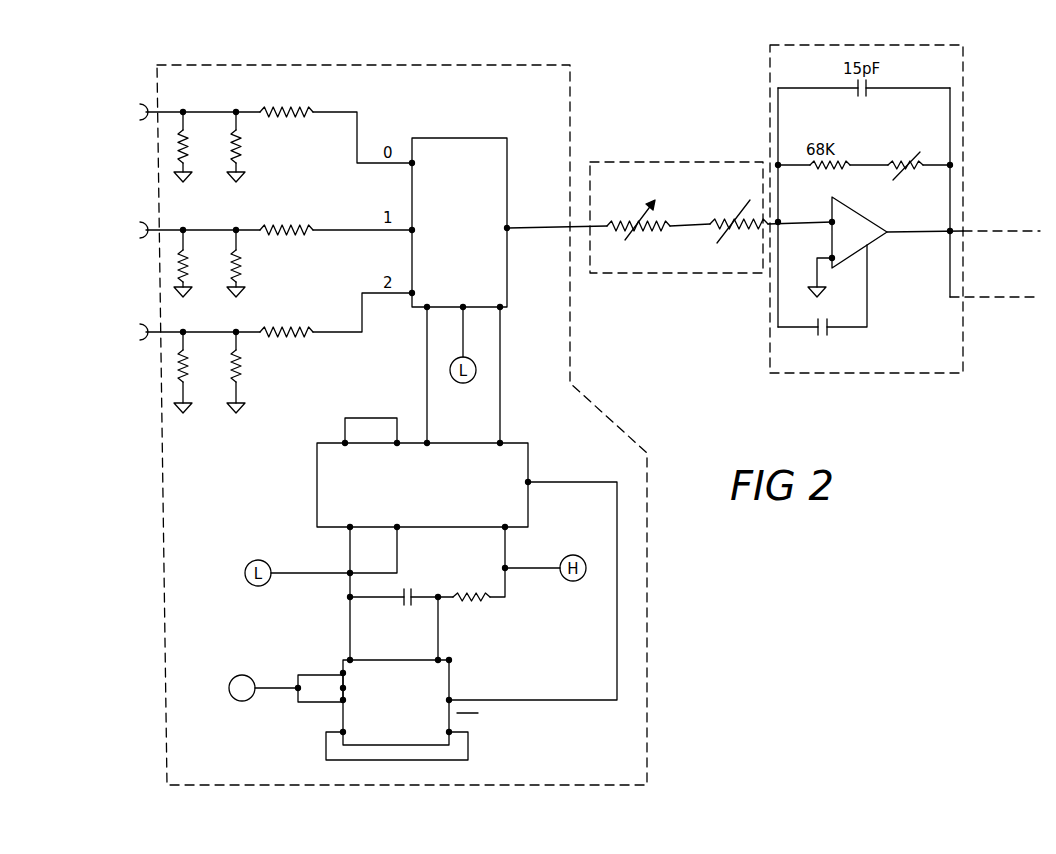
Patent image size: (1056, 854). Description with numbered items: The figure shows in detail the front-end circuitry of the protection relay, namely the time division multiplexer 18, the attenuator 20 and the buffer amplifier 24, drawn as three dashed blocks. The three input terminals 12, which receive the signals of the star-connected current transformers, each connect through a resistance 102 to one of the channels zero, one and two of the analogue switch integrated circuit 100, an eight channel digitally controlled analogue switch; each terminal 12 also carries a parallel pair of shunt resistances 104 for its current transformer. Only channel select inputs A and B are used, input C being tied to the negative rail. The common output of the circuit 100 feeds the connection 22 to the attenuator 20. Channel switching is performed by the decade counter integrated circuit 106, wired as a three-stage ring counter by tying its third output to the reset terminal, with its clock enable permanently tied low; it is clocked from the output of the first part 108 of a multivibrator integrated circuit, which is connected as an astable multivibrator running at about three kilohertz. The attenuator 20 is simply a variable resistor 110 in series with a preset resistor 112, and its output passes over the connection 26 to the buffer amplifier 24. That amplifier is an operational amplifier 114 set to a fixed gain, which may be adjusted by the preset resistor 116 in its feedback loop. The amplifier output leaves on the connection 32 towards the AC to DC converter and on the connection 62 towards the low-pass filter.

The input terminals 12 is at (140, 98).
The time division multiplexer 18 is at (572, 112).
The attenuator 20 is at (640, 275).
The connection 22 is at (573, 235).
The buffer amplifier 24 is at (920, 375).
The connection 26 is at (777, 233).
The connection 32 is at (975, 228).
The connection 62 is at (960, 300).
The 4051A integrated circuit 100 is at (453, 140).
The resistance 102 is at (293, 118).
The shunt resistances 104 is at (232, 150).
The 4017B integrated circuit 106 is at (318, 487).
The first part of a 4528B integrated circuit 108 is at (452, 682).
The variable resistor 110 is at (648, 232).
The preset resistor 112 is at (712, 210).
The operational amplifier 114 is at (862, 238).
The preset resistor 116 is at (915, 170).